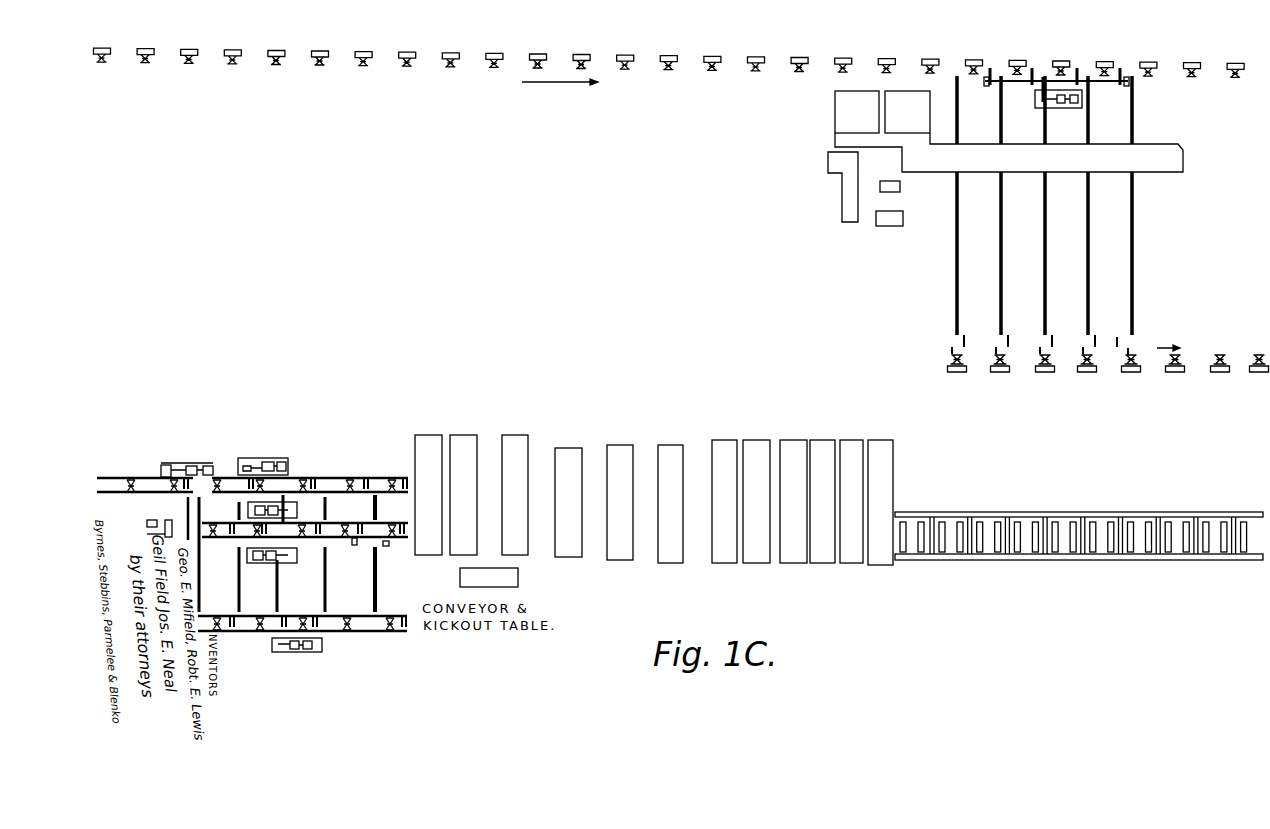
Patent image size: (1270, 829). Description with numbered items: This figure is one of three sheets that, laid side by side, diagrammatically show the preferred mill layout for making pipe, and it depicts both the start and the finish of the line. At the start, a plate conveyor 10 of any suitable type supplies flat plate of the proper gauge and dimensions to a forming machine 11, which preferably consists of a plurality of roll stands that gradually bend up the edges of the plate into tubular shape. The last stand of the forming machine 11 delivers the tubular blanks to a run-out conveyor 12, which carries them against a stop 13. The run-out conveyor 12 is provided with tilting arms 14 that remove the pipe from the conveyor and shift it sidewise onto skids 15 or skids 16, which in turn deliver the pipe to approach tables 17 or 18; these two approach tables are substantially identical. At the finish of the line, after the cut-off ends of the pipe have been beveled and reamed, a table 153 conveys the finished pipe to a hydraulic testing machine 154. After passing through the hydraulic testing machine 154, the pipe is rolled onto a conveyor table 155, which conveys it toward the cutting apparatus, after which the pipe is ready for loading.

The plate conveyor 10 is at (1035, 558).
The forming machine 11 is at (698, 552).
The run-out conveyor 12 is at (328, 523).
The stop 13 is at (176, 514).
The tilting arms 14 is at (360, 525).
The skids 15 is at (348, 548).
The skids 16 is at (330, 503).
The approach table 17 is at (143, 477).
The approach table 18 is at (328, 633).
The table 153 is at (728, 63).
The hydraulic testing machine 154 is at (1170, 155).
The conveyor table 155 is at (1160, 362).